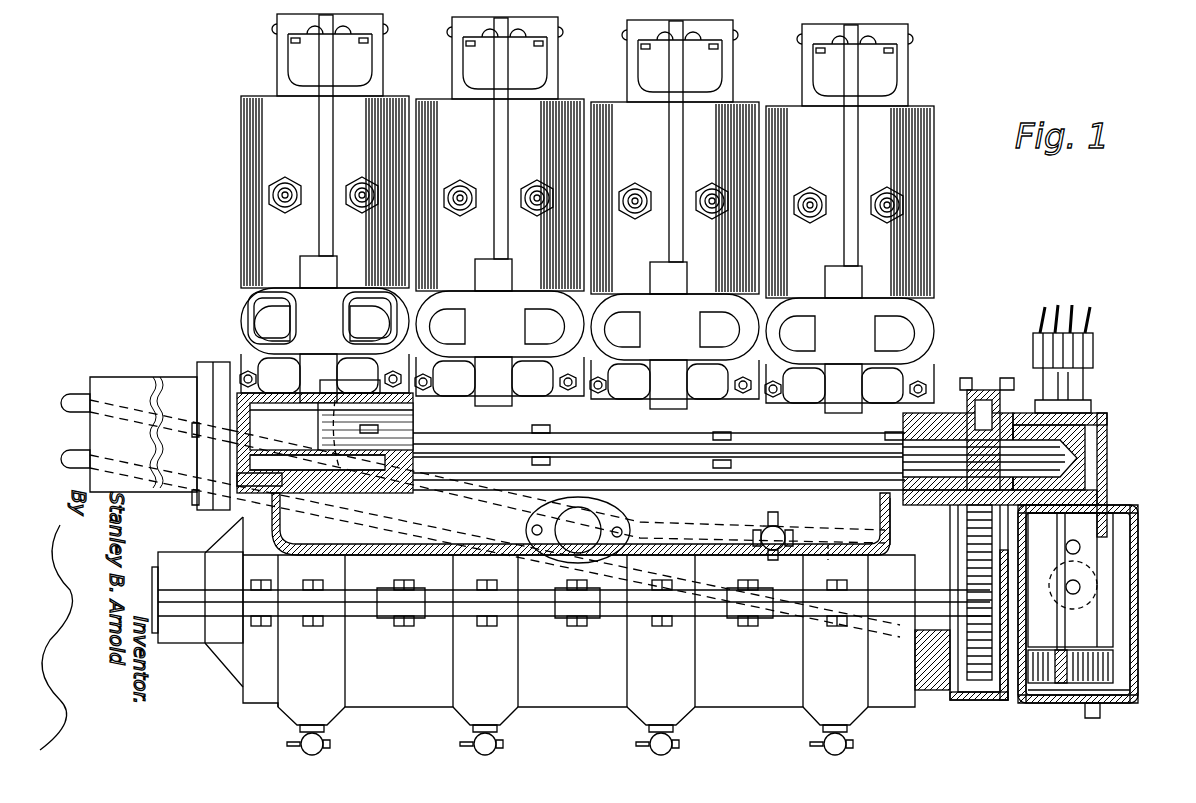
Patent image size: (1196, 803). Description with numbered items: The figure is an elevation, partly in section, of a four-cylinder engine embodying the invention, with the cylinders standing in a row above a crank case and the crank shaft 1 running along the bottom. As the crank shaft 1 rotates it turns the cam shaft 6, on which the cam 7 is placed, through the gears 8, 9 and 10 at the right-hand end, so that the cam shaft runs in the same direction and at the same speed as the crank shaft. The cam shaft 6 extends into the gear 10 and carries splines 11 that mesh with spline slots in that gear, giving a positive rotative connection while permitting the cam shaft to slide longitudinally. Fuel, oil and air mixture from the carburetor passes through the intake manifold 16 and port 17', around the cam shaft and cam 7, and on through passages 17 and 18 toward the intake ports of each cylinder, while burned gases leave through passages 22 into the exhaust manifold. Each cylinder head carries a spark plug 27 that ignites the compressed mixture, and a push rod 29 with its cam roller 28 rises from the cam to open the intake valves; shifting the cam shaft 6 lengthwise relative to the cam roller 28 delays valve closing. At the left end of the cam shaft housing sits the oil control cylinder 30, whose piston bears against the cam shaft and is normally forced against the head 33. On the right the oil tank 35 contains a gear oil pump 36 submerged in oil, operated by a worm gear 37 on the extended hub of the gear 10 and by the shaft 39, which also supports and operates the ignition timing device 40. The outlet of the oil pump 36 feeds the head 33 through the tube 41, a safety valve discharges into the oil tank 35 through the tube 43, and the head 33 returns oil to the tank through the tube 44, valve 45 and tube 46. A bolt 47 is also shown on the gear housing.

The crank shaft 1 is at (152, 588).
The cam shaft 6 is at (413, 448).
The cam 7 is at (325, 443).
The gear 8 is at (958, 694).
The gear 9 is at (965, 540).
The gear 10 is at (965, 400).
The splines 11 is at (905, 462).
The intake manifold 16 is at (370, 548).
The passage 17 is at (562, 213).
The port 17' is at (563, 514).
The passage 18 is at (385, 397).
The passages 22 is at (258, 325).
The spark plug 27 is at (348, 185).
The cam roller 28 is at (333, 448).
The push rod 29 is at (318, 244).
The oil control cylinder 30 is at (155, 485).
The head 33 is at (90, 380).
The oil tank 35 is at (1138, 565).
The gear oil pump 36 is at (1112, 655).
The worm gear 37 is at (1107, 422).
The shaft 39 is at (1100, 530).
The ignition timing device 40 is at (1090, 336).
The tube 41 is at (58, 452).
The tube 43 is at (1078, 600).
The tube 44 is at (62, 394).
The valve 45 is at (758, 530).
The tube 46 is at (840, 568).
The bolt 47 is at (970, 378).